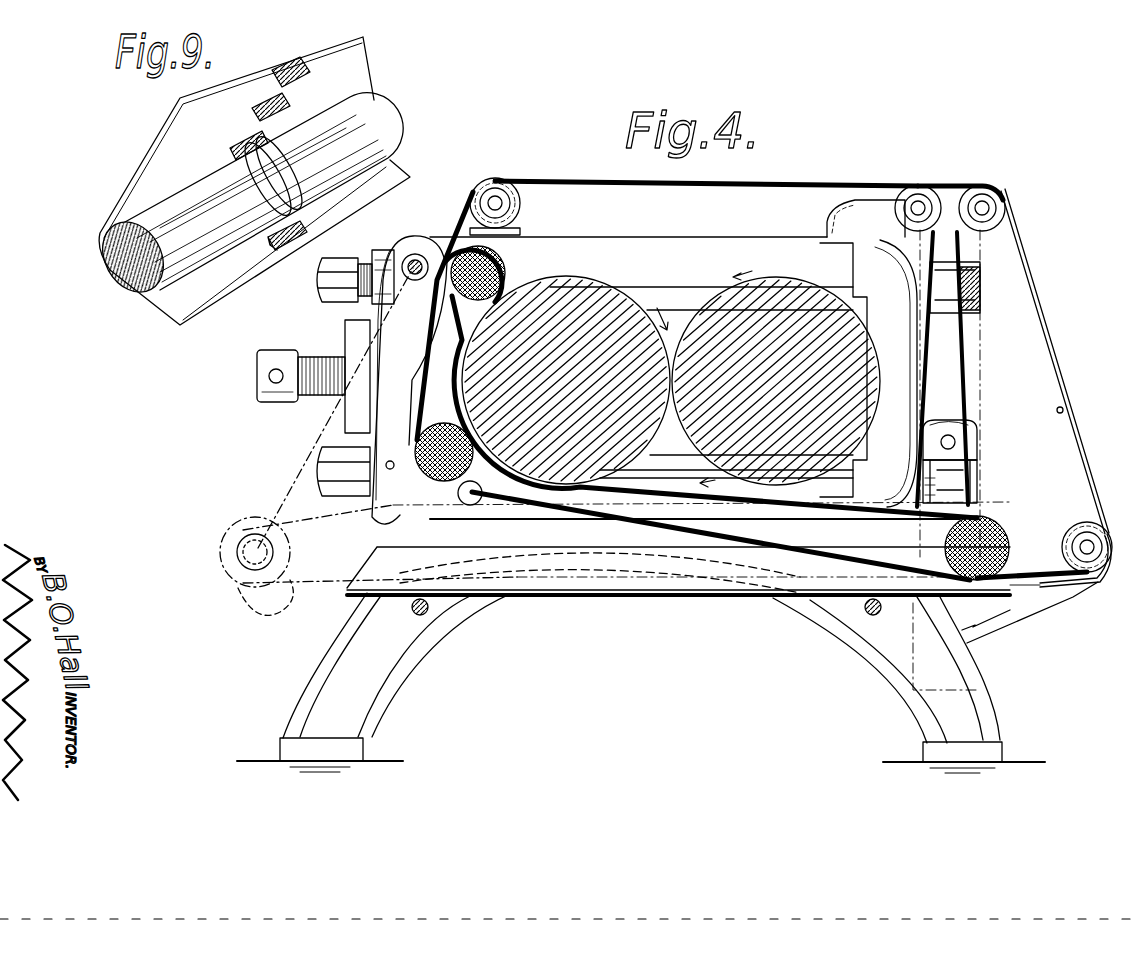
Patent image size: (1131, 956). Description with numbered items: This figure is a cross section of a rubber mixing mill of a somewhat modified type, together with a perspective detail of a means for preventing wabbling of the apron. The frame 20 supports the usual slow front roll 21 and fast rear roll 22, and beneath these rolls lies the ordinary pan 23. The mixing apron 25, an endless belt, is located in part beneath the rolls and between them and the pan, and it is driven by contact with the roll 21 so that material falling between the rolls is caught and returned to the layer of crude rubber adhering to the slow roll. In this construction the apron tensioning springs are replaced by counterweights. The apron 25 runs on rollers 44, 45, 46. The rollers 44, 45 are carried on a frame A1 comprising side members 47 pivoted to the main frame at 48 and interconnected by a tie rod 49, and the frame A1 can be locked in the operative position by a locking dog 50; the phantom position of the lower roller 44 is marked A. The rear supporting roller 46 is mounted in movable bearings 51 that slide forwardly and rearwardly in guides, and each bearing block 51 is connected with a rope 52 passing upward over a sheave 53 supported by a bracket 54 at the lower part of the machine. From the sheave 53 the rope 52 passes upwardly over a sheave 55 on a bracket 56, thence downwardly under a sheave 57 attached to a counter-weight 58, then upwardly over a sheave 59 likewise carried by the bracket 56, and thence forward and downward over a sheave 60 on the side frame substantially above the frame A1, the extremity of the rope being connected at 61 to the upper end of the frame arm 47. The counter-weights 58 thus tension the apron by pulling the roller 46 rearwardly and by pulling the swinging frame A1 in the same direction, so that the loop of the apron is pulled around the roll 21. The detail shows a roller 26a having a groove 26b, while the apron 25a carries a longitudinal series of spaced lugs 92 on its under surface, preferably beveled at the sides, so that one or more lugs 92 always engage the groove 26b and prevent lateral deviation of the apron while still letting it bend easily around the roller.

In FIG. 4, the frame 20 is at (673, 358).
In FIG. 4, the slow front roll 21 is at (605, 297).
In FIG. 4, the fast rear roll 22 is at (778, 292).
In FIG. 4, the pan 23 is at (627, 597).
In FIG. 4, the mixing apron 25 is at (683, 527).
In FIG. 9, the apron 25a is at (348, 62).
In FIG. 9, the roller 26a is at (247, 198).
In FIG. 9, the groove 26b is at (282, 160).
In FIG. 4, the roller 44 is at (505, 272).
In FIG. 4, the roller 45 is at (417, 445).
In FIG. 4, the rear supporting roller 46 is at (1008, 534).
In FIG. 4, the side members 47 is at (415, 372).
In FIG. 4, the pivot 48 is at (477, 505).
In FIG. 4, the tie rod 49 is at (415, 254).
In FIG. 4, the locking dog 50 is at (390, 472).
In FIG. 4, the movable bearings 51 is at (1008, 588).
In FIG. 4, the rope 52 is at (970, 326).
In FIG. 4, the sheave 53 is at (1087, 532).
In FIG. 4, the bracket 54 is at (1039, 585).
In FIG. 4, the sheave 55 is at (990, 192).
In FIG. 4, the brackets 56 is at (873, 212).
In FIG. 4, the sheave 57 is at (970, 417).
In FIG. 4, the counter-weights 58 is at (985, 458).
In FIG. 4, the sheave 59 is at (925, 200).
In FIG. 4, the sheave 60 is at (495, 195).
In FIG. 4, the rope connection 61 is at (365, 305).
In FIG. 9, the lugs 92 is at (250, 262).
In FIG. 4, the position A is at (300, 611).
In FIG. 4, the frame A1 is at (400, 339).